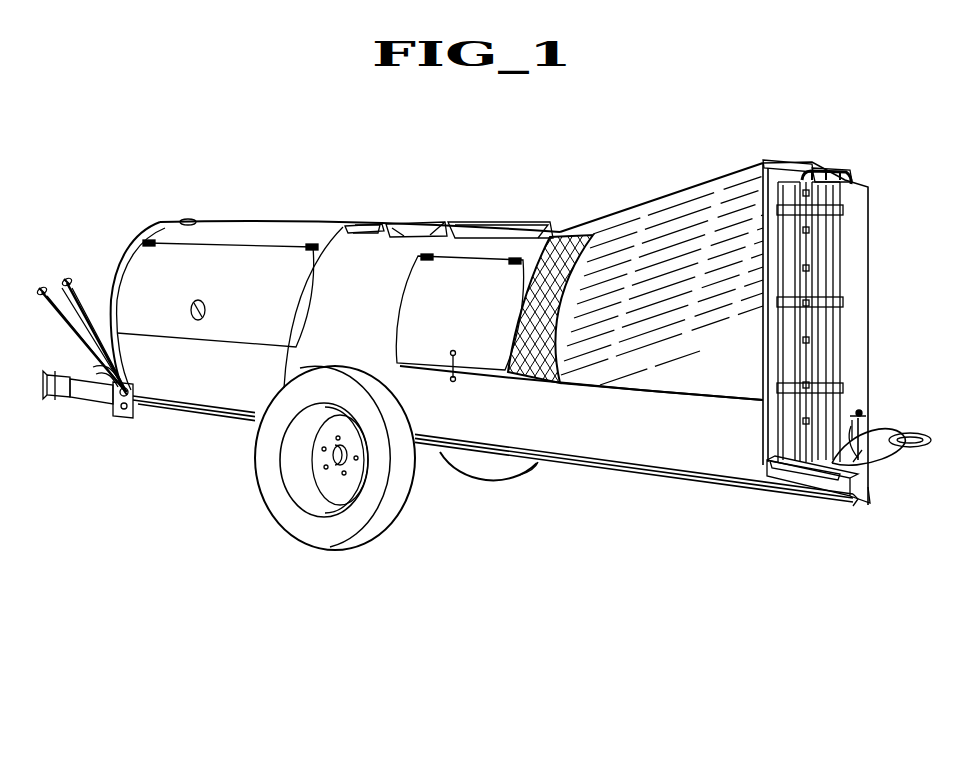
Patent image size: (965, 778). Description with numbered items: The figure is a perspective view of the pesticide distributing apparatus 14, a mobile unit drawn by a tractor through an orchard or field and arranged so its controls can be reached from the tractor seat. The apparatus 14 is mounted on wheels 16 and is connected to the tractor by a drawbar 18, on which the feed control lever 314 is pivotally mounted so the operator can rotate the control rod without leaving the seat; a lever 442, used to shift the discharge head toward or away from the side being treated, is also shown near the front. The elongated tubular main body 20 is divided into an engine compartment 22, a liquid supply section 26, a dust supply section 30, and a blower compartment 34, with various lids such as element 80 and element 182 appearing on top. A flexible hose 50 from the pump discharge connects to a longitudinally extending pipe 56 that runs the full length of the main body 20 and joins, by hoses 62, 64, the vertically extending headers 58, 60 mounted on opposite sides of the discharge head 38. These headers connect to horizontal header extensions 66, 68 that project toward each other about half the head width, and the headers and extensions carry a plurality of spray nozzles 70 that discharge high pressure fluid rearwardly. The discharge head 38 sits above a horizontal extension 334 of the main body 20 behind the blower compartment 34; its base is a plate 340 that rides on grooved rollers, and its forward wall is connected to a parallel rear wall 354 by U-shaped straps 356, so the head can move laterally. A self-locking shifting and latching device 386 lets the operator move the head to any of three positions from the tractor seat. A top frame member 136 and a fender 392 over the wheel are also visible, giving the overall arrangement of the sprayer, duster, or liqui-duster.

The pesticide distributing apparatus 14 is at (804, 110).
The wheels 16 is at (482, 477).
The drawbar 18 is at (60, 397).
The main body 20 is at (338, 230).
The engine compartment 22 is at (222, 225).
The liquid supply section 26 is at (400, 225).
The dust supply section 30 is at (493, 230).
The blower compartment 34 is at (699, 190).
The discharge head 38 is at (866, 253).
The flexible hose 50 is at (95, 366).
The longitudinally extending pipe 56 is at (190, 420).
The vertical header 58 is at (840, 325).
The vertical header 60 is at (852, 182).
The hose 62 is at (898, 434).
The hose 64 is at (872, 428).
The horizontal header extension 66 is at (791, 180).
The horizontal header extension 68 is at (847, 176).
The spray nozzles 70 is at (828, 172).
The lid 80 is at (352, 226).
The top frame member 136 is at (772, 162).
The lid 182 is at (476, 222).
The feed control lever 314 is at (72, 288).
The horizontal extension 334 is at (816, 488).
The base plate 340 is at (803, 470).
The rear wall 354 is at (858, 230).
The straps 356 is at (843, 210).
The shifting and latching device 386 is at (865, 447).
The fender 392 is at (557, 472).
The lever 442 is at (60, 302).